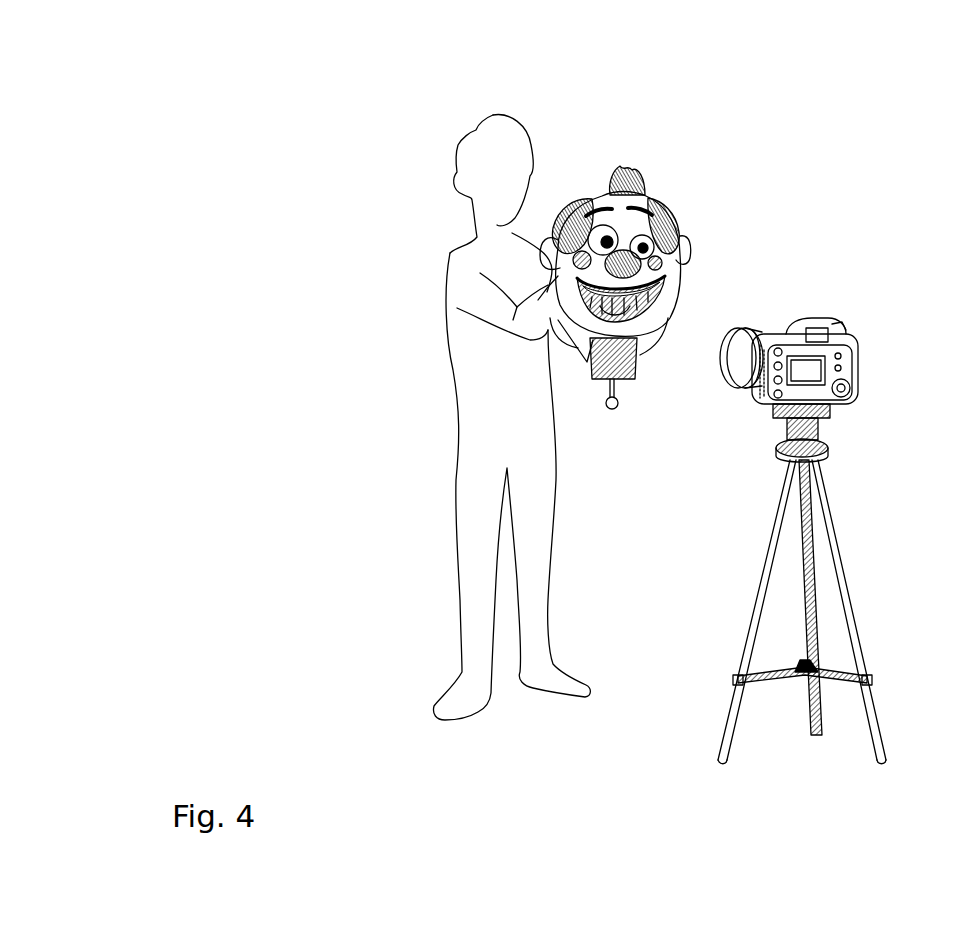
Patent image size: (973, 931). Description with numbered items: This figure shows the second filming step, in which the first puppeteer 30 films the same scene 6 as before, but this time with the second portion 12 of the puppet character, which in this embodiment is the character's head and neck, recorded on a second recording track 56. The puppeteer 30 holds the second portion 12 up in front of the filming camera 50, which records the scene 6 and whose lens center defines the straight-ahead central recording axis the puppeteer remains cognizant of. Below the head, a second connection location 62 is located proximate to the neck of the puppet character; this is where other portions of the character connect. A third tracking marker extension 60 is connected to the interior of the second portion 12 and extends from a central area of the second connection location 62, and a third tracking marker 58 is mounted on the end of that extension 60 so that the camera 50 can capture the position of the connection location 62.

The scene 6 is at (834, 134).
The first puppeteer 30 is at (457, 250).
The second portion of the puppet character 12 is at (678, 293).
The second connection location 62 is at (648, 368).
The third tracking marker extension 60 is at (615, 387).
The third tracking marker 58 is at (603, 413).
The filming camera 50 is at (853, 343).
The second recording track 56 is at (856, 413).